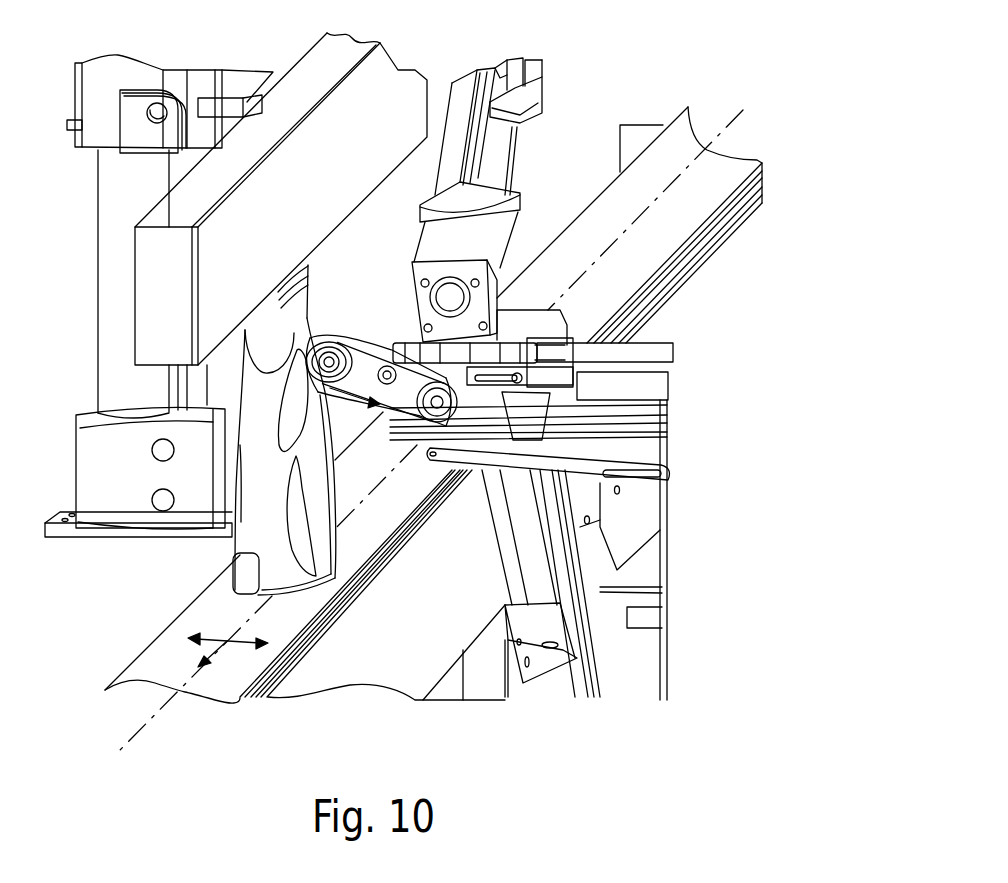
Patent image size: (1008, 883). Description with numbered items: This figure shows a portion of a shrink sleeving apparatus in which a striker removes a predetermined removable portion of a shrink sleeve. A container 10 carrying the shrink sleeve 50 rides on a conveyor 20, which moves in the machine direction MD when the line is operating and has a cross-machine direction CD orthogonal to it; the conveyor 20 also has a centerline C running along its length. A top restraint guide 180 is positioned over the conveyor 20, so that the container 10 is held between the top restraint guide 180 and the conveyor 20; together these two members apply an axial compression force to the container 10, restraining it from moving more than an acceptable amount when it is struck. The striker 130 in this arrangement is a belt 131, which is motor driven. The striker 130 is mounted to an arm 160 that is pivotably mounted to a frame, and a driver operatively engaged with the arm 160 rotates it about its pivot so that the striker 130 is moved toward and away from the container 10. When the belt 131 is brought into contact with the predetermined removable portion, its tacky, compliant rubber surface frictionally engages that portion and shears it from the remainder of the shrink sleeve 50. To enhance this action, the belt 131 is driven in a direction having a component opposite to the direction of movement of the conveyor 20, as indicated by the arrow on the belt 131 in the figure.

The container 10 is at (237, 562).
The conveyor 20 is at (356, 548).
The shrink sleeve 50 is at (315, 506).
The striker 130 is at (325, 343).
The belt 131 is at (375, 353).
The arm 160 is at (386, 340).
The top restraint guide 180 is at (294, 228).
The centerline C is at (610, 248).
The cross-machine direction CD is at (210, 703).
The machine direction MD is at (201, 687).